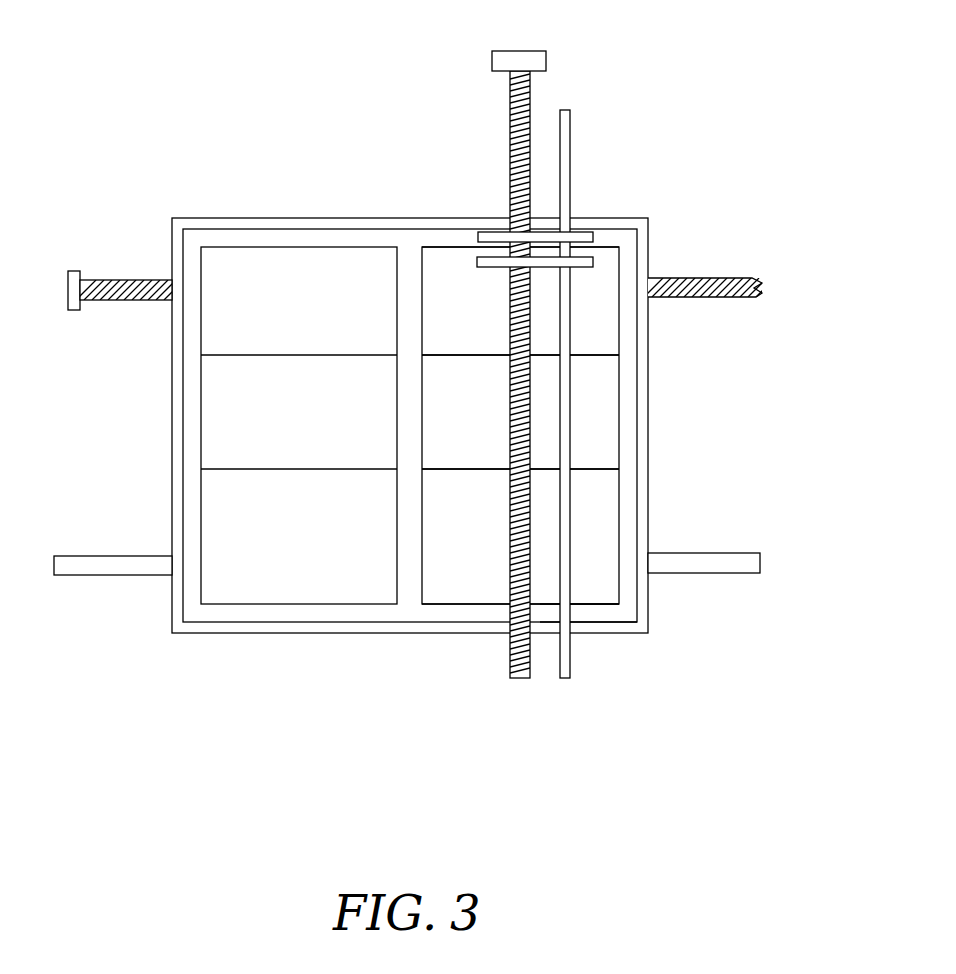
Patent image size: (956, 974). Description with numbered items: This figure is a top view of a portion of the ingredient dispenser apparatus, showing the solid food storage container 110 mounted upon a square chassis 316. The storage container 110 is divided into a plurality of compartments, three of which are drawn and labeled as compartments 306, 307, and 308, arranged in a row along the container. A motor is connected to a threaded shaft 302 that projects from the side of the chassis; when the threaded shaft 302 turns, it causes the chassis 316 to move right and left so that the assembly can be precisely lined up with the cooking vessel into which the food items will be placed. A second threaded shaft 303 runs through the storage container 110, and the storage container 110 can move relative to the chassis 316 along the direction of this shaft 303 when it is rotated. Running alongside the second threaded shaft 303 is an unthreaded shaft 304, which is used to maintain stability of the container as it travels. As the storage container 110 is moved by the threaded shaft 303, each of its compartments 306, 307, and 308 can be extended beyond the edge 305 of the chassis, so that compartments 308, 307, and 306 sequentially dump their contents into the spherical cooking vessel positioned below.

The solid food storage container 110 is at (445, 265).
The threaded shaft 302 is at (79, 270).
The second threaded shaft 303 is at (547, 58).
The unthreaded shaft 304 is at (571, 118).
The edge 305 is at (176, 636).
The compartment 306 is at (520, 301).
The compartment 307 is at (520, 412).
The compartment 308 is at (520, 536).
The square chassis 316 is at (597, 615).